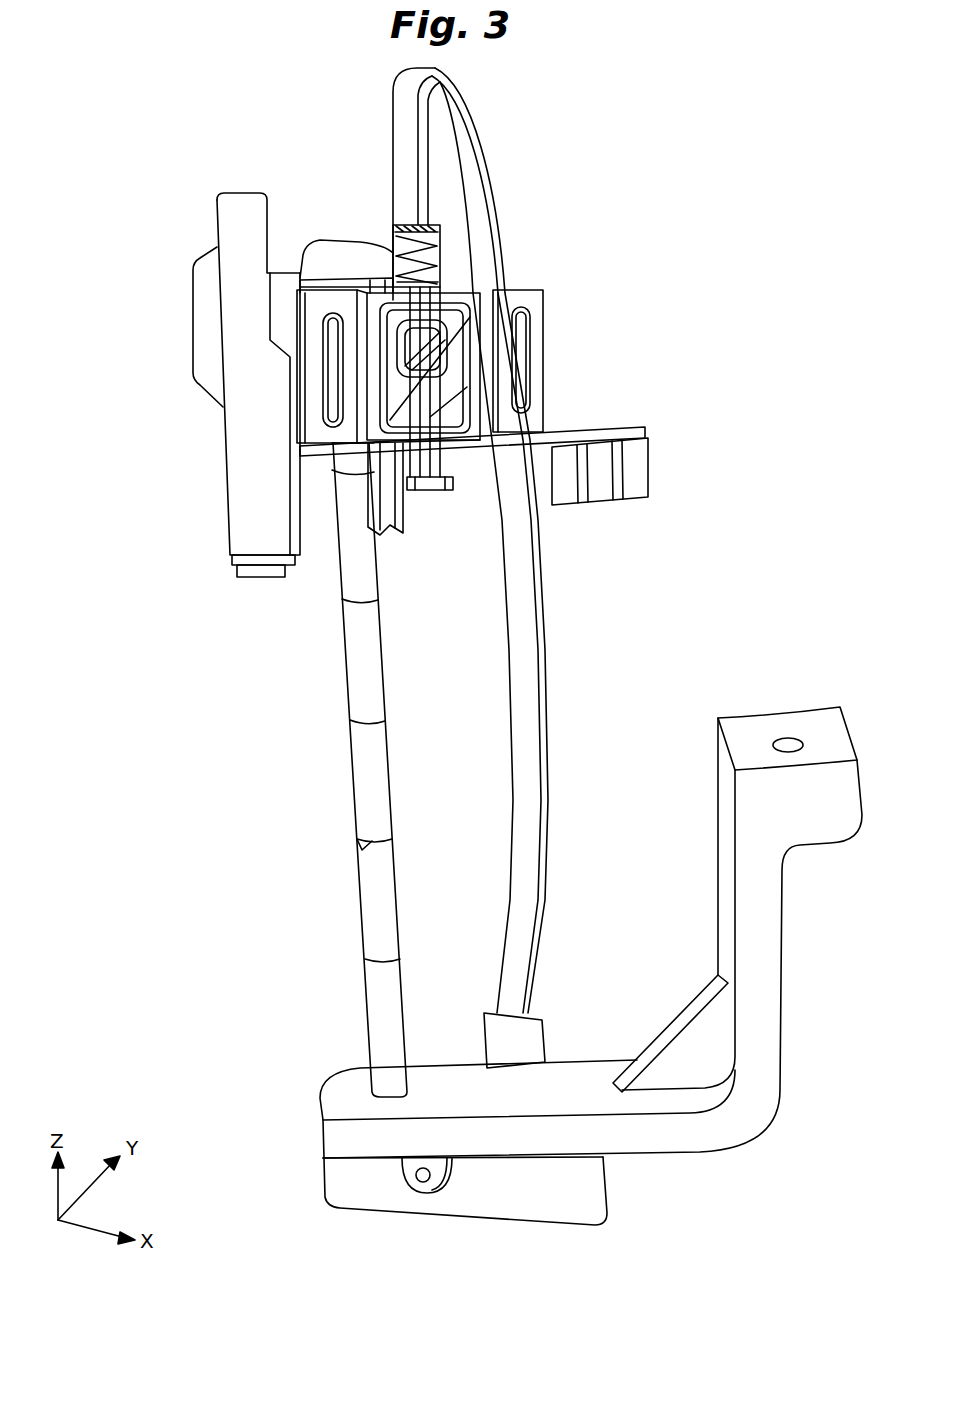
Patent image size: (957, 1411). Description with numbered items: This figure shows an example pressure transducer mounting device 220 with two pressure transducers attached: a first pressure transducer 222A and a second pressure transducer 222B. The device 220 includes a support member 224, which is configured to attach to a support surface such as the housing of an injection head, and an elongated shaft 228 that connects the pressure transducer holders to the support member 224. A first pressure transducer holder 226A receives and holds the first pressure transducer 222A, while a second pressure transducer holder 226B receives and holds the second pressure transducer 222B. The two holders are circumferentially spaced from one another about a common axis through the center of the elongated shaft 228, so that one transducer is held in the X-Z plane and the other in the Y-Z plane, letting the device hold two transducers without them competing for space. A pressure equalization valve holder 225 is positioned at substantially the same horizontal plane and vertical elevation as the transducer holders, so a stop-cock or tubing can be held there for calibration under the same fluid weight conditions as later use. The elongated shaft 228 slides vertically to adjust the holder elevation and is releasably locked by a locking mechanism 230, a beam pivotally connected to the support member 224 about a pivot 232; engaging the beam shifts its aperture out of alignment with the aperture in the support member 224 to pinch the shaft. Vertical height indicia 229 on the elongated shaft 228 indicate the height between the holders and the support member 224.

The pressure transducer mounting device 220 is at (226, 116).
The first pressure transducer 222A is at (480, 348).
The second pressure transducer 222B is at (200, 336).
The support member 224 is at (755, 940).
The pressure equalization valve holder 225 is at (654, 468).
The first pressure transducer holder 226A is at (514, 264).
The second pressure transducer holder 226B is at (295, 236).
The elongated shaft 228 is at (357, 634).
The vertical height indicia 229 is at (365, 848).
The locking mechanism 230 is at (299, 1196).
The pivot 232 is at (408, 1180).